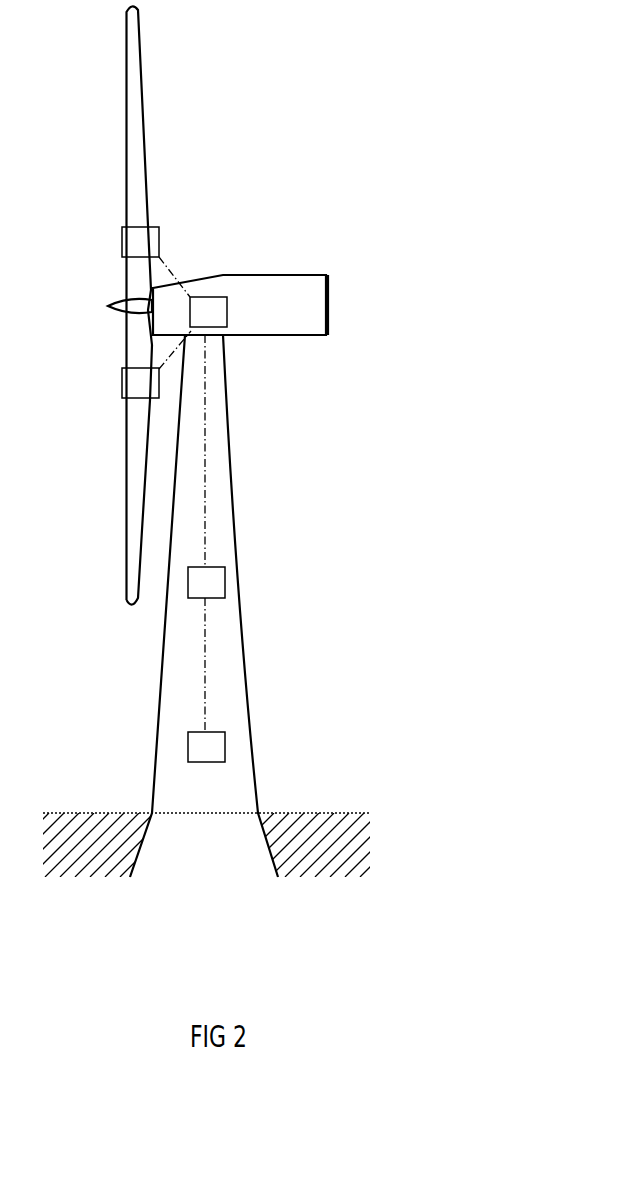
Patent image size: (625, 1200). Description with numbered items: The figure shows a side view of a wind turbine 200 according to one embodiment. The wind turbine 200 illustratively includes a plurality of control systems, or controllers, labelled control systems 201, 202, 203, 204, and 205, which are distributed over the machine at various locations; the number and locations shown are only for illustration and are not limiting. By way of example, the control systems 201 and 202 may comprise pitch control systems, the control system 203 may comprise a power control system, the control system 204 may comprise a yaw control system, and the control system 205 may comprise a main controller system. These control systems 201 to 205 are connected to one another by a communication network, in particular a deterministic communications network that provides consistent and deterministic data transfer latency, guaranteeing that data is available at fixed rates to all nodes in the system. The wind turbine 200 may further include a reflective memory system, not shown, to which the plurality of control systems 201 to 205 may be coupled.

The wind turbine 200 is at (474, 122).
The control system 201 is at (159, 229).
The control system 202 is at (122, 388).
The control system 203 is at (214, 297).
The control system 204 is at (214, 567).
The control system 205 is at (225, 745).